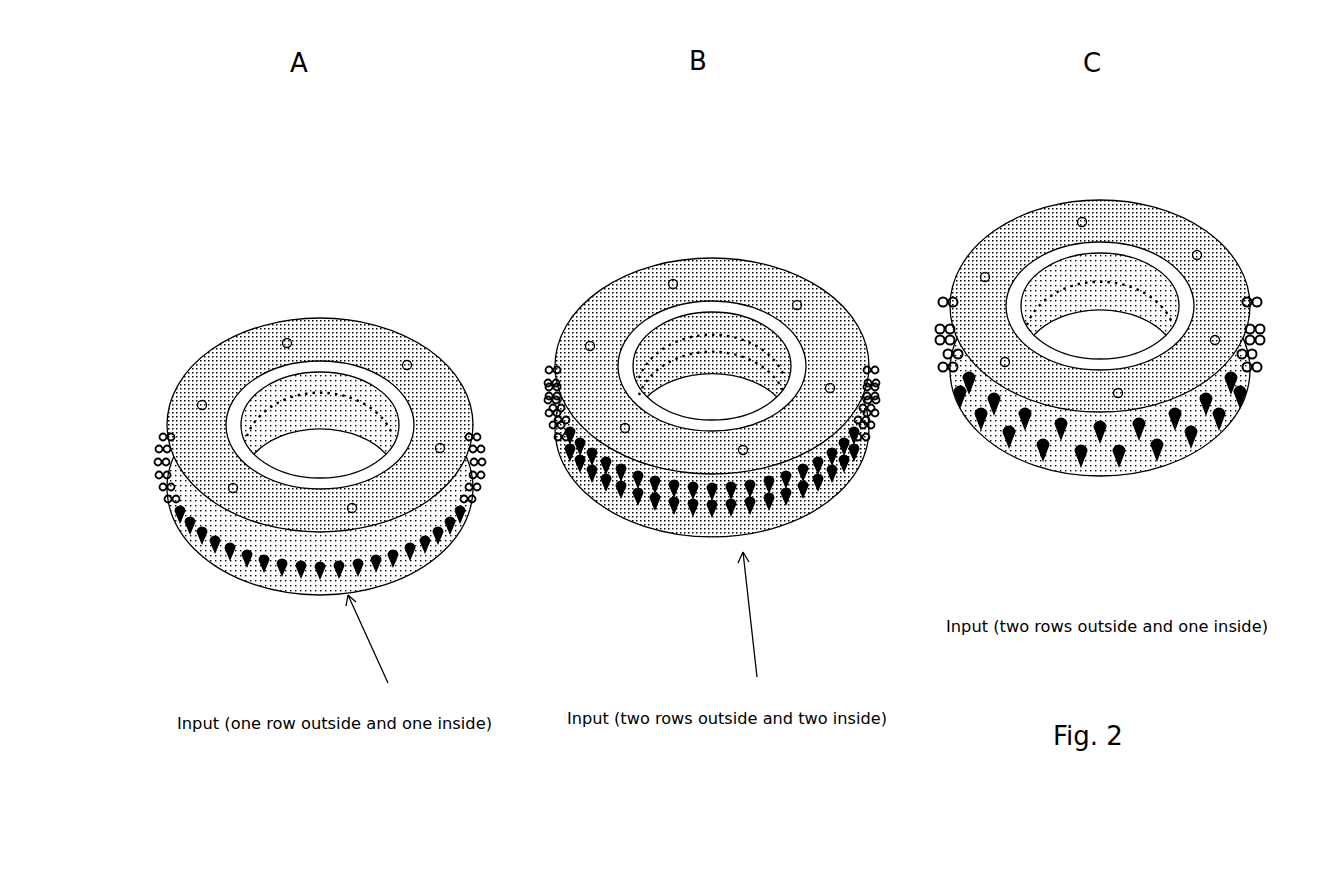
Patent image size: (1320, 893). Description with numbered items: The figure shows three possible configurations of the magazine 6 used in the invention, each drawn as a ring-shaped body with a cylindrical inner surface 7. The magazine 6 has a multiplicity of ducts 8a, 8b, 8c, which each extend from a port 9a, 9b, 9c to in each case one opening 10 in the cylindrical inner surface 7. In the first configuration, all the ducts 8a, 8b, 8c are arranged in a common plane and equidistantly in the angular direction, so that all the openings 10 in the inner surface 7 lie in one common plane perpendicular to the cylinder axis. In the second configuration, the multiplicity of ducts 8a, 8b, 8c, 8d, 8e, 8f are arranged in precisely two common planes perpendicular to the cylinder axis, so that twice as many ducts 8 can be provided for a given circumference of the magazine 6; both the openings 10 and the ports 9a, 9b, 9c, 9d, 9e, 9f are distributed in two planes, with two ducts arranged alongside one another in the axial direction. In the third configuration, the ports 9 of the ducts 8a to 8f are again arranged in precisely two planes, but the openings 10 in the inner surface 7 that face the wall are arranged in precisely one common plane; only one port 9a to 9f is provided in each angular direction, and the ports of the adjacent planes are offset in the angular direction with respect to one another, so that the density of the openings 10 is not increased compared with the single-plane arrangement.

The magazine 6 is at (348, 327).
The cylindrical inner surface 7 is at (358, 392).
The opening 10 is at (252, 407).
The duct 8a is at (177, 532).
The duct 8b is at (238, 572).
The duct 8c is at (478, 510).
The duct 8d is at (692, 510).
The duct 8e is at (793, 493).
The duct 8f is at (878, 395).
The port 9a is at (843, 478).
The port 9b is at (1252, 397).
The port 9c is at (612, 500).
The port 9d is at (690, 512).
The port 9e is at (800, 513).
The port 9f is at (880, 400).
The outer tooth row 1 8 is at (1253, 397).
The outer tooth row 2 9 is at (1270, 332).